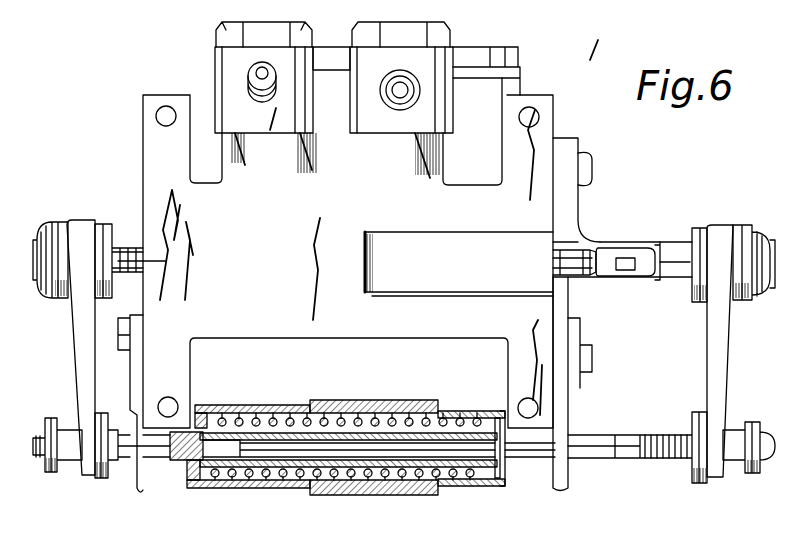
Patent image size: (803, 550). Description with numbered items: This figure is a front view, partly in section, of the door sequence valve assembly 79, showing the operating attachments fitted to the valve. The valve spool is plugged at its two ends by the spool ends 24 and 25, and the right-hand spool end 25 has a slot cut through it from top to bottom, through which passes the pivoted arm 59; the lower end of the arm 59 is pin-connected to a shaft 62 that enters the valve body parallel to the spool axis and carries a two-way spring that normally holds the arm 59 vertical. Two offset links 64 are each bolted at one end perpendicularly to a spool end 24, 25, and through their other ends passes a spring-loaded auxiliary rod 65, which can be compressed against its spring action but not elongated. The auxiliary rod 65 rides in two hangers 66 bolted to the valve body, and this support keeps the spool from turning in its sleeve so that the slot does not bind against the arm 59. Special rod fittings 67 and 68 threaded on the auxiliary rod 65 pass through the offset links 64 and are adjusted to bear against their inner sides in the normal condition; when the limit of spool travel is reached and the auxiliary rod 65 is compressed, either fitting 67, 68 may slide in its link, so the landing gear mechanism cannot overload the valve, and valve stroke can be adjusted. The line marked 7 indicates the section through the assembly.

The section line 7 is at (132, 262).
The spool end 24 is at (122, 250).
The spool end 25 is at (682, 253).
The arm 59 is at (649, 270).
The shaft 62 is at (566, 270).
The offset links 64 is at (73, 340).
The auxiliary rod 65 is at (523, 461).
The hangers 66 is at (141, 488).
The rod fitting 67 is at (66, 470).
The rod fitting 68 is at (735, 463).
The sequence valve assembly 79 is at (370, 225).